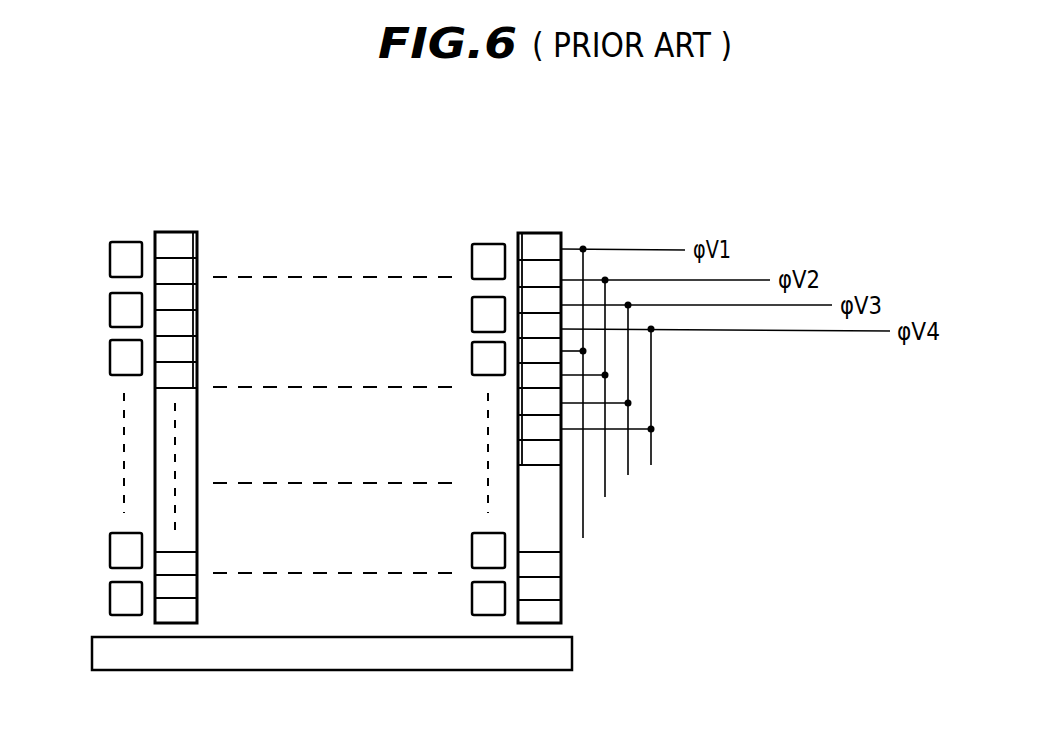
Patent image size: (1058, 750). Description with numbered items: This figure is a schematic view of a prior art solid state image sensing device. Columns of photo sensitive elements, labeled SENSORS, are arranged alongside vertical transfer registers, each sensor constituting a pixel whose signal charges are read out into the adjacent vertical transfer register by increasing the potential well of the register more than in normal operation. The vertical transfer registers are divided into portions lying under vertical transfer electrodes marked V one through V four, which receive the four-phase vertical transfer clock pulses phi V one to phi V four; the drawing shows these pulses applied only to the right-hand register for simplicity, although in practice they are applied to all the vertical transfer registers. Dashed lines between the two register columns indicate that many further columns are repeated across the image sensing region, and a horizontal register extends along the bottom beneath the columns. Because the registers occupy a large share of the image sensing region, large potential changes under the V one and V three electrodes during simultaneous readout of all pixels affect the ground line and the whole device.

The photo sensitive elements SENSORS is at (128, 247).